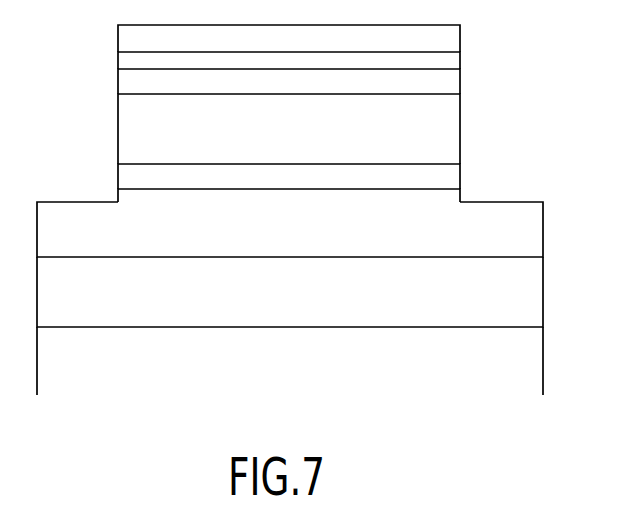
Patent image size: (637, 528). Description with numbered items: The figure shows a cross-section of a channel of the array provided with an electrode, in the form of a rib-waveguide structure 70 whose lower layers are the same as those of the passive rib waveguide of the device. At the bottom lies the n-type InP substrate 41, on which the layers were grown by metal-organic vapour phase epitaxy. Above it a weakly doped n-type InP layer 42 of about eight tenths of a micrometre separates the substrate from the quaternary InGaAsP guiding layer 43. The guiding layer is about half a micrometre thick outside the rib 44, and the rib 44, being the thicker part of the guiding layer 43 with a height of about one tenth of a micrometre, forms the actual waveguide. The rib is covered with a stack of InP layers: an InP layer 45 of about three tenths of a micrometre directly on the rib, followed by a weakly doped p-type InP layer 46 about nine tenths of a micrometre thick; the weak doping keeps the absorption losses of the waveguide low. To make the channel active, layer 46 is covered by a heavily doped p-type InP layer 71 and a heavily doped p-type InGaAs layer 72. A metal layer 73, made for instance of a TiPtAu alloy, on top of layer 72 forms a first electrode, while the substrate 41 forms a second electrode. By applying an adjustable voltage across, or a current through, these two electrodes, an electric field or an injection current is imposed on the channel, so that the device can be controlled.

The rib-waveguide structure 70 is at (316, 207).
The metal layer 73 is at (453, 36).
The heavily doped p+-InGaAs layer 72 is at (452, 62).
The heavily doped p+-InP layer 71 is at (447, 85).
The weakly doped p+-InP layer 46 is at (437, 125).
The InP layer 45 is at (445, 175).
The rib 44 is at (463, 194).
The guiding layer 43 is at (525, 228).
The weakly doped n-InP layer 42 is at (527, 296).
The substrate 41 is at (520, 364).